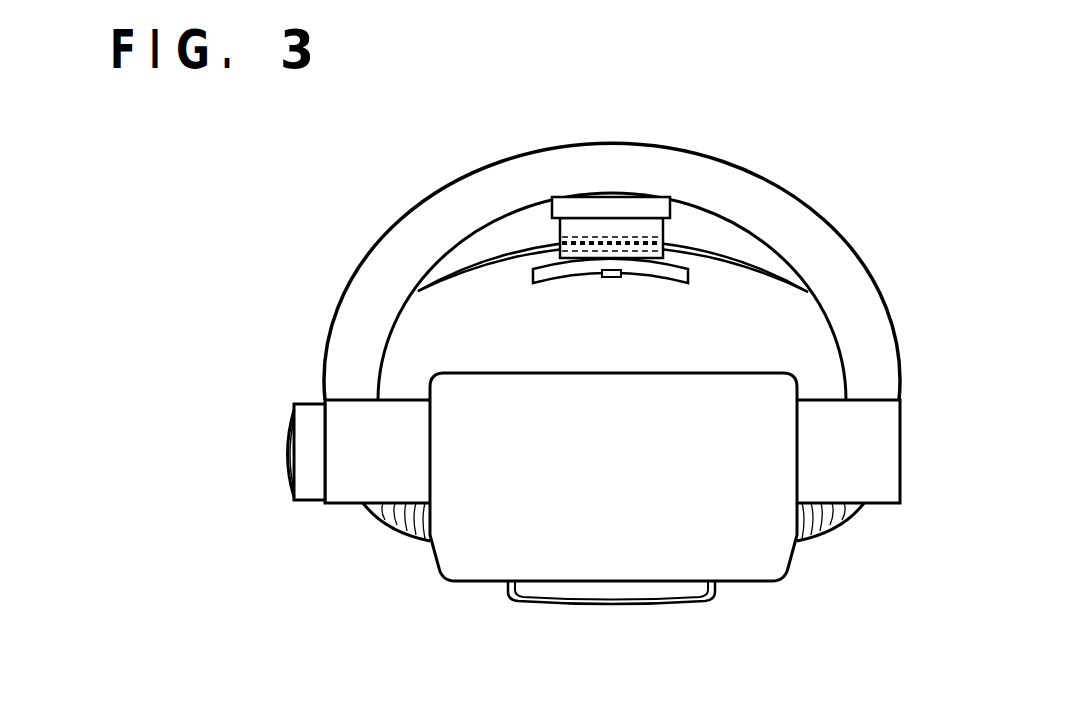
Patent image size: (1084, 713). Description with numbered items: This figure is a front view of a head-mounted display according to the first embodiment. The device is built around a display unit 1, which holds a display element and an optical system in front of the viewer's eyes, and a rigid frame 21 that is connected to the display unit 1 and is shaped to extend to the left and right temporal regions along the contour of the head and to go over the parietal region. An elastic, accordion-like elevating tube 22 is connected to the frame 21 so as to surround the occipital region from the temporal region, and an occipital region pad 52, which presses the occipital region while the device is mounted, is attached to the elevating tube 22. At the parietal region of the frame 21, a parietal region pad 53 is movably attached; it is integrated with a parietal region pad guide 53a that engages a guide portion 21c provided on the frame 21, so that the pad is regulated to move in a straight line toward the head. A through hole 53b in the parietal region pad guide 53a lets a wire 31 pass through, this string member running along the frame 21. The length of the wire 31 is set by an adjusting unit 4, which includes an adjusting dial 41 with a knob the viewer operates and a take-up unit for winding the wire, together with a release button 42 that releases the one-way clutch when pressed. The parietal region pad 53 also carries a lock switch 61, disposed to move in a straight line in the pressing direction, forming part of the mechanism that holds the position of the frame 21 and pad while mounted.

The display unit 1 is at (728, 568).
The adjusting unit 4 is at (190, 445).
The frame 21 is at (472, 188).
The guide portion 21c is at (606, 206).
The elevating tube 22 is at (400, 527).
The wire 31 is at (453, 270).
The adjusting dial 41 is at (303, 488).
The release button 42 is at (285, 453).
The occipital region pad 52 is at (550, 587).
The parietal region pad 53 is at (675, 268).
The parietal region pad guide 53a is at (560, 228).
The through hole 53b is at (648, 228).
The lock switch 61 is at (604, 277).